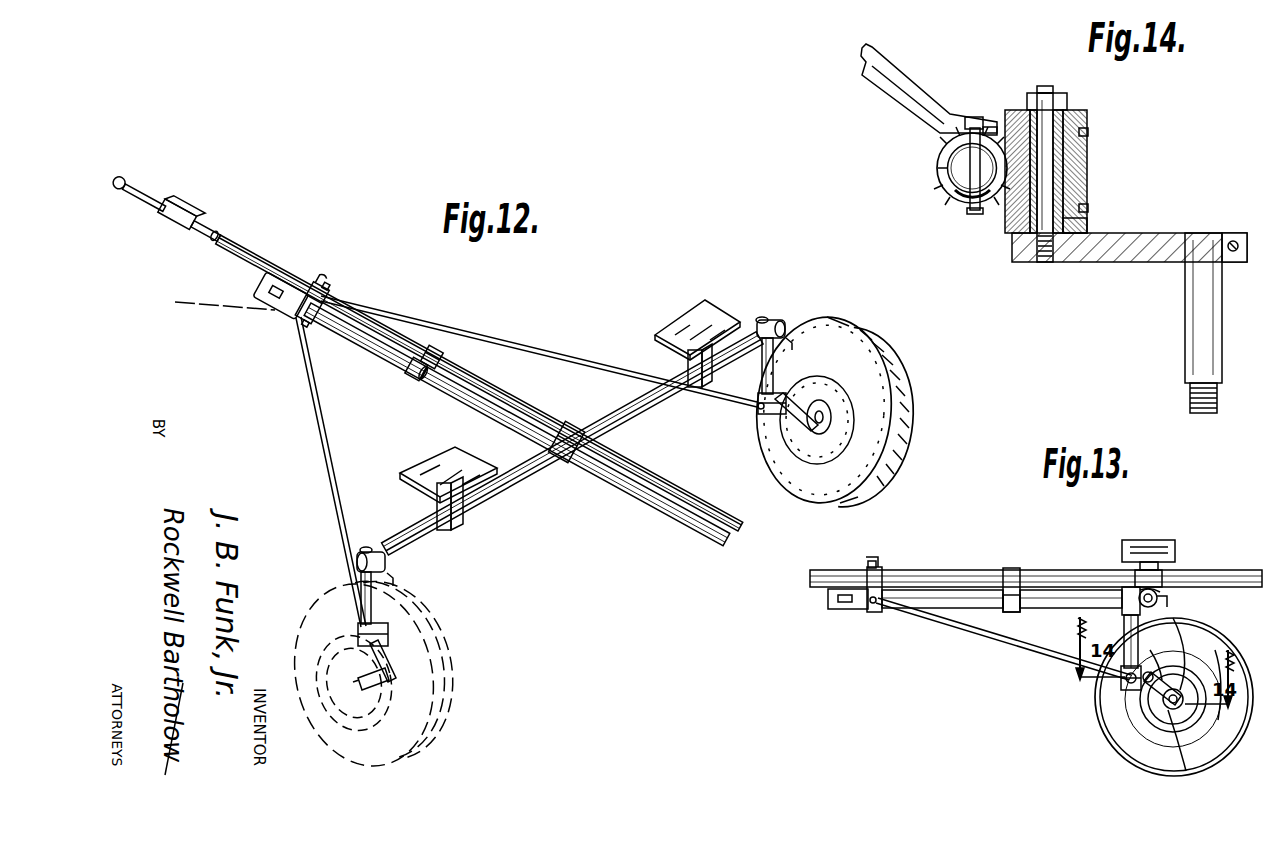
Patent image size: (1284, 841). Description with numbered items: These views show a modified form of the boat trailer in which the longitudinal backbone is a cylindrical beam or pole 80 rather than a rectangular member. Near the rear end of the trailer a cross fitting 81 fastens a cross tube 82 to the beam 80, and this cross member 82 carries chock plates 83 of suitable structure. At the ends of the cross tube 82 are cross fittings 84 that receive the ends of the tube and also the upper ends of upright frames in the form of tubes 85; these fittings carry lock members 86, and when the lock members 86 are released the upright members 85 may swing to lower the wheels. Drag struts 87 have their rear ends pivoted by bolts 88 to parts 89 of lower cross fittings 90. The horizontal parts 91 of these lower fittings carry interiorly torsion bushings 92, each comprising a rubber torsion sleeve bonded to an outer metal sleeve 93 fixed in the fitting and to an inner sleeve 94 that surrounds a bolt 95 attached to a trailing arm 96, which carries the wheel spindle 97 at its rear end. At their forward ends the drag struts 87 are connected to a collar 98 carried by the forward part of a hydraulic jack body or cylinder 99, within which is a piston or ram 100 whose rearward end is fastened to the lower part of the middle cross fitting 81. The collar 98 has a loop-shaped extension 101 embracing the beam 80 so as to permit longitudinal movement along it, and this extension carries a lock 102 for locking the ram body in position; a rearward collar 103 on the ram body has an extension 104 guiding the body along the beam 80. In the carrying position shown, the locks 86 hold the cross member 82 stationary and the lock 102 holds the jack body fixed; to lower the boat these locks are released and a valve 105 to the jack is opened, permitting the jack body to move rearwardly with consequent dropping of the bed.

In FIG. 12, the cylindrical beam or pole 80 is at (288, 272).
In FIG. 13, the cylindrical beam or pole 80 is at (1222, 572).
In FIG. 12, the cross fitting 81 is at (572, 432).
In FIG. 13, the cross fitting 81 is at (1163, 577).
In FIG. 12, the cross tube 82 is at (640, 410).
In FIG. 13, the cross tube 82 is at (1158, 595).
In FIG. 12, the chock plates 83 is at (700, 318).
In FIG. 13, the chock plates 83 is at (1158, 542).
In FIG. 12, the cross fittings 84 is at (375, 553).
In FIG. 13, the cross fittings 84 is at (1160, 608).
In FIG. 12, the upright frames in the form of tubes 85 is at (372, 600).
In FIG. 13, the upright frames in the form of tubes 85 is at (1140, 643).
In FIG. 14, the upright frames in the form of tubes 85 is at (954, 178).
In FIG. 12, the lock members 86 is at (393, 577).
In FIG. 13, the lock members 86 is at (1168, 601).
In FIG. 12, the drag struts 87 is at (568, 364).
In FIG. 13, the drag struts 87 is at (1000, 637).
In FIG. 14, the drag struts 87 is at (909, 82).
In FIG. 14, the bolts 88 is at (976, 116).
In FIG. 13, the parts of lower cross fittings 89 is at (1122, 688).
In FIG. 14, the parts of lower cross fittings 89 is at (937, 166).
In FIG. 12, the lower cross fittings 90 is at (390, 640).
In FIG. 13, the lower cross fittings 90 is at (1130, 692).
In FIG. 14, the lower cross fittings 90 is at (1003, 218).
In FIG. 13, the horizontal parts 91 is at (1180, 675).
In FIG. 14, the horizontal parts 91 is at (1088, 156).
In FIG. 12, the torsion bushings 92 is at (758, 405).
In FIG. 13, the torsion bushings 92 is at (1150, 702).
In FIG. 14, the torsion bushings 92 is at (1088, 117).
In FIG. 14, the outer metal sleeve 93 is at (1088, 186).
In FIG. 14, the inner sleeve 94 is at (1080, 216).
In FIG. 14, the bolt 95 is at (1052, 122).
In FIG. 12, the trailing arm 96 is at (374, 660).
In FIG. 13, the trailing arm 96 is at (1178, 708).
In FIG. 14, the trailing arm 96 is at (1144, 250).
In FIG. 12, the wheel spindle 97 is at (368, 690).
In FIG. 13, the wheel spindle 97 is at (1183, 702).
In FIG. 14, the wheel spindle 97 is at (1212, 322).
In FIG. 12, the collar 98 is at (298, 312).
In FIG. 13, the collar 98 is at (884, 580).
In FIG. 12, the hydraulic jack body or cylinder 99 is at (362, 330).
In FIG. 13, the hydraulic jack body or cylinder 99 is at (948, 604).
In FIG. 12, the piston or ram 100 is at (488, 410).
In FIG. 13, the piston or ram 100 is at (1068, 590).
In FIG. 12, the loop-shaped extension 101 is at (323, 296).
In FIG. 13, the loop-shaped extension 101 is at (866, 573).
In FIG. 12, the lock 102 is at (312, 282).
In FIG. 13, the lock 102 is at (880, 558).
In FIG. 12, the rearward collar 103 is at (425, 387).
In FIG. 13, the rearward collar 103 is at (1014, 612).
In FIG. 12, the extension 104 is at (436, 352).
In FIG. 13, the extension 104 is at (1010, 570).
In FIG. 13, the valve 105 is at (847, 612).